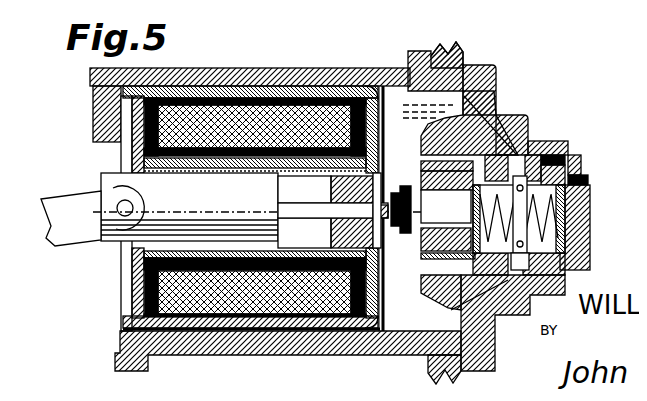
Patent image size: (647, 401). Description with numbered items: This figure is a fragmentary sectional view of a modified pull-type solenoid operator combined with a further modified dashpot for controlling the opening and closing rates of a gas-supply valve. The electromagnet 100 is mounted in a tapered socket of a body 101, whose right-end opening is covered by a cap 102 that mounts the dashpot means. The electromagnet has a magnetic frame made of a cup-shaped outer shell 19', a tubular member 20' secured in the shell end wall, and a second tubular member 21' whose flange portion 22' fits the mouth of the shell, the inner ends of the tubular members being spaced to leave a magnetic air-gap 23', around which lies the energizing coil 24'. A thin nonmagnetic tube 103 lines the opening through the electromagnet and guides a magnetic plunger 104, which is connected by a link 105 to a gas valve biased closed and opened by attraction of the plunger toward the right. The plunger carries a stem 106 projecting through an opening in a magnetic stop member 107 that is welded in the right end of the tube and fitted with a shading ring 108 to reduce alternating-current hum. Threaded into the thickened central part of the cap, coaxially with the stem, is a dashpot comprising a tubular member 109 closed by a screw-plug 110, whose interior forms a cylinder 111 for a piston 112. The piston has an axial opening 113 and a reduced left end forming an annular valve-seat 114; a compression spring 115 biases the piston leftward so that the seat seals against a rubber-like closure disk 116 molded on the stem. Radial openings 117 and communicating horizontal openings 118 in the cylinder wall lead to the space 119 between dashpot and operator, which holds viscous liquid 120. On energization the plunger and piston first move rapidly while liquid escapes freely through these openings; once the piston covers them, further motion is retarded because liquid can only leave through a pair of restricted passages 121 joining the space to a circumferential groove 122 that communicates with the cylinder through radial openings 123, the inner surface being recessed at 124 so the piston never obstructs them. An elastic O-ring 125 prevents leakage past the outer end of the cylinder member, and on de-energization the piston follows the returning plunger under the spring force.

The electromagnet 100 is at (393, 97).
The body 101 is at (342, 334).
The cap 102 is at (485, 90).
The tube 103 is at (270, 148).
The magnetic plunger 104 is at (205, 160).
The link 105 is at (57, 200).
The stem 106 is at (302, 205).
The stop member 107 is at (330, 148).
The shading ring 108 is at (340, 181).
The tubular member 109 is at (567, 158).
The screw-plug 110 is at (573, 192).
The cylinder 111 is at (540, 232).
The piston 112 is at (410, 152).
The axial opening 113 is at (420, 176).
The valve-seat 114 is at (415, 250).
The compression spring 115 is at (540, 210).
The closure disk 116 is at (403, 222).
The radial openings 117 is at (440, 290).
The horizontal openings 118 is at (421, 284).
The space 119 is at (383, 312).
The viscous liquid 120 is at (438, 56).
The restricted passages 121 is at (490, 103).
The circumferential groove 122 is at (488, 307).
The radial openings 123 is at (530, 130).
The recess 124 is at (563, 138).
The O-ring 125 is at (550, 127).
The outer shell 19' is at (251, 239).
The tubular member 20' is at (341, 286).
The tubular member 21' is at (254, 292).
The flange portion 22' is at (110, 207).
The magnetic air-gap 23' is at (255, 295).
The energizing coil 24' is at (255, 317).